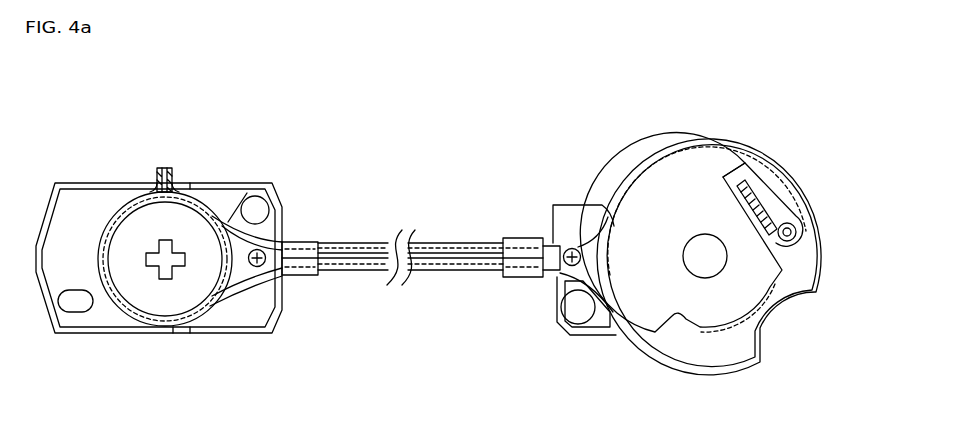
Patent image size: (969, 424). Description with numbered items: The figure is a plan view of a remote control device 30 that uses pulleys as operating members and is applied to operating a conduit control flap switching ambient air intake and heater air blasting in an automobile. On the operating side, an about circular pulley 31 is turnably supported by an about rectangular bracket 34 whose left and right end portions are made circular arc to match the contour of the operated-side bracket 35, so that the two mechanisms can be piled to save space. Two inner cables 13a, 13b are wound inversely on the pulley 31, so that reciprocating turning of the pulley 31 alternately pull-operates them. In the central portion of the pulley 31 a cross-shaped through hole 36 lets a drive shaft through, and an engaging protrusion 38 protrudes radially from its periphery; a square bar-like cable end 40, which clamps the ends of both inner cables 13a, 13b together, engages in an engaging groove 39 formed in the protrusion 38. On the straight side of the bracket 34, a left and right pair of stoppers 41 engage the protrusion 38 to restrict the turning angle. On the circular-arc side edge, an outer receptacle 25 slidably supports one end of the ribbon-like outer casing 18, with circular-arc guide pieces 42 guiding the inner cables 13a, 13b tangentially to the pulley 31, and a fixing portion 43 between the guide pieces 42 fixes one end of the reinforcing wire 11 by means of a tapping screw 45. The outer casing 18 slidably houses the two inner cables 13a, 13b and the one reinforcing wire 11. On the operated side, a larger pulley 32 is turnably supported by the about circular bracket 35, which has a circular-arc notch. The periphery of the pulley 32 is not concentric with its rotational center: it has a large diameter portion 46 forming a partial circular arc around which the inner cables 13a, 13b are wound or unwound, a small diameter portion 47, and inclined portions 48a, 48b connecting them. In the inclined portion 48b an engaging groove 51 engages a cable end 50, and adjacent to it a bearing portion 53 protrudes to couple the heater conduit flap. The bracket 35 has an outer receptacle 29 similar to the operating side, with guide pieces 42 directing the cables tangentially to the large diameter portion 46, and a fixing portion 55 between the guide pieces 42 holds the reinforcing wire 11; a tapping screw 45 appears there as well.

The reinforcing wire 11 is at (284, 250).
The inner cable 13a is at (217, 221).
The inner cable 13b is at (210, 314).
The outer casing 18 is at (378, 274).
The outer receptacle 25 is at (316, 251).
The outer receptacle 29 is at (529, 238).
The remote control device 30 is at (431, 182).
The pulley 31 is at (205, 316).
The pulley 32 is at (652, 348).
The bracket 34 is at (161, 268).
The bracket 35 is at (747, 346).
The cross-shaped through hole 36 is at (105, 314).
The engaging protrusion 38 is at (150, 181).
The engaging groove 39 is at (160, 169).
The cable end 40 is at (170, 170).
The stopper 41 is at (190, 186).
The guide piece 42 is at (293, 272).
The fixing portion 43 is at (285, 283).
The tapping screw 45 is at (265, 252).
The large diameter portion 46 is at (667, 152).
The small diameter portion 47 is at (718, 330).
The inclined portion 48a is at (667, 343).
The inclined portion 48b is at (783, 256).
The cable end 50 is at (768, 200).
The engaging groove 51 is at (745, 178).
The bearing portion 53 is at (808, 240).
The fixing portion 55 is at (597, 219).